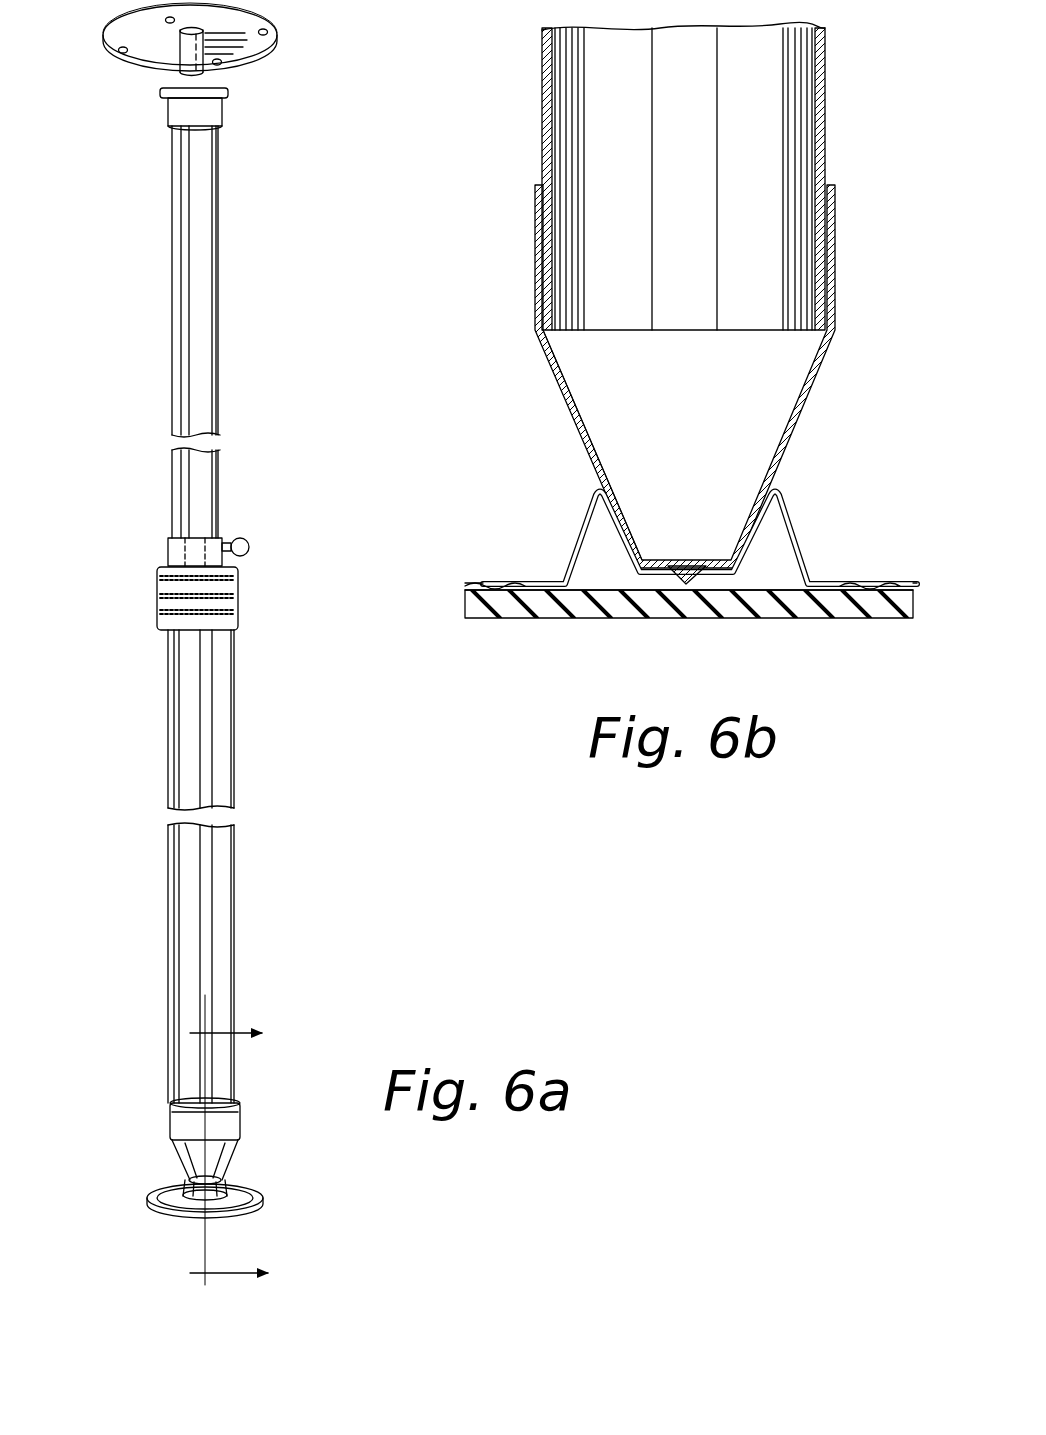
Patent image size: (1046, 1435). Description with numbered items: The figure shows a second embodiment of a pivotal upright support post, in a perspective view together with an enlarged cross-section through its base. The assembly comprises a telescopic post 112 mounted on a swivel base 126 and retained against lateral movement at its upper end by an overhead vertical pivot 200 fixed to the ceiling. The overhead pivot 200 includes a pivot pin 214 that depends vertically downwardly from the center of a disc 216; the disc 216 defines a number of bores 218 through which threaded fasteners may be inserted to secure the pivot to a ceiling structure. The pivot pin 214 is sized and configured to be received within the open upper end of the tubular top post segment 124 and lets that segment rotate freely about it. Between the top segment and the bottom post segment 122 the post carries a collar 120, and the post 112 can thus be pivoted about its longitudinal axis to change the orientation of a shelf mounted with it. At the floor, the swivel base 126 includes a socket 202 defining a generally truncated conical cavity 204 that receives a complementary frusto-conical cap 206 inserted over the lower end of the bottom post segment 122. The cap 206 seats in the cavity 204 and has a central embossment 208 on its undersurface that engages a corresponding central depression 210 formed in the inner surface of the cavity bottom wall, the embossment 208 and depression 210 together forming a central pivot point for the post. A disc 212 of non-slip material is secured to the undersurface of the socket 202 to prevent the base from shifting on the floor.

In FIG. 6A, the telescopic post 112 is at (292, 420).
In FIG. 6A, the locking collar 120 is at (242, 600).
In FIG. 6A, the bottom post segment 122 is at (188, 681).
In FIG. 6B, the bottom post segment 122 is at (543, 138).
In FIG. 6A, the tubular top post segment 124 is at (224, 285).
In FIG. 6A, the swivel base 126 is at (150, 1158).
In FIG. 6A, the overhead vertical pivot 200 is at (260, 68).
In FIG. 6A, the socket 202 is at (226, 1186).
In FIG. 6B, the socket 202 is at (583, 533).
In FIG. 6B, the truncated conical cavity 204 is at (628, 507).
In FIG. 6A, the frusto-conical cap 206 is at (230, 1140).
In FIG. 6B, the frusto-conical cap 206 is at (557, 382).
In FIG. 6B, the central embossment 208 is at (688, 583).
In FIG. 6B, the central depression 210 is at (680, 592).
In FIG. 6A, the disc 212 is at (246, 1210).
In FIG. 6B, the disc 212 is at (757, 605).
In FIG. 6A, the pivot pin 214 is at (186, 56).
In FIG. 6A, the disc 216 is at (255, 22).
In FIG. 6A, the bores 218 is at (168, 25).